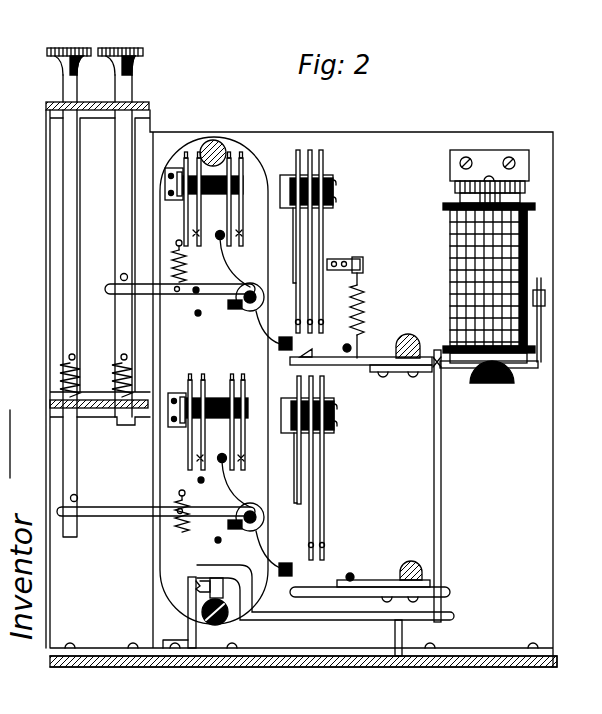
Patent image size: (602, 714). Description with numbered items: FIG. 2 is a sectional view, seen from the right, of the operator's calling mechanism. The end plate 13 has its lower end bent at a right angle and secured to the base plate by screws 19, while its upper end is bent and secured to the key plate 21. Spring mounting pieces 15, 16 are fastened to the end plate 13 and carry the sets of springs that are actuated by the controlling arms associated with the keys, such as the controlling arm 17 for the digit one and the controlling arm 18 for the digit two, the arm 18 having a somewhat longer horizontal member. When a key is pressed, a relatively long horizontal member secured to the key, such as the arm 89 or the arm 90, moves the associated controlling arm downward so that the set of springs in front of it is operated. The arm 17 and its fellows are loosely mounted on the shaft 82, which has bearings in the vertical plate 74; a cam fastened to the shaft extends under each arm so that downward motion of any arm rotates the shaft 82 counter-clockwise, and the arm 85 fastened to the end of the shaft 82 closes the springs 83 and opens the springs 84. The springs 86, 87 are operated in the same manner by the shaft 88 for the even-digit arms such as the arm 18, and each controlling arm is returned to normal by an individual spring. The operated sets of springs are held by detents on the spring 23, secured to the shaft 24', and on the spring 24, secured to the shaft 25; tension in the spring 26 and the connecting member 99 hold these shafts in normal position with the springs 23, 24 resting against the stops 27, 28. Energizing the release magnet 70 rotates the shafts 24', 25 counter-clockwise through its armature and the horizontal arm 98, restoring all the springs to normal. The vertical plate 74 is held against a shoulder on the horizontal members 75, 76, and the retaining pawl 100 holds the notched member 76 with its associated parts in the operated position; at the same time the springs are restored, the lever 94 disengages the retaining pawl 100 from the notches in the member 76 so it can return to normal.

The end plate 13 is at (527, 494).
The spring mounting piece 15 is at (286, 176).
The spring mounting piece 16 is at (288, 399).
The controlling arm 17 is at (116, 294).
The controlling arm 18 is at (125, 517).
The screws 19 is at (236, 652).
The key plate 21 is at (145, 107).
The spring 23 is at (338, 366).
The spring 24 is at (365, 599).
The shaft 24' is at (418, 325).
The shaft 25 is at (409, 566).
The spring 26 is at (365, 304).
The stop 27 is at (347, 345).
The stop 28 is at (350, 572).
The release magnet 70 is at (528, 247).
The vertical plate 74 is at (176, 556).
The horizontal member 75 is at (220, 141).
The horizontal member 76 is at (228, 620).
The shaft 82 is at (241, 309).
The springs 83 is at (196, 232).
The springs 84 is at (234, 230).
The arm 85 is at (226, 266).
The springs 86 is at (197, 317).
The springs 87 is at (195, 294).
The shaft 88 is at (244, 532).
The arm 89 is at (78, 497).
The arm 90 is at (121, 275).
The lever 94 is at (328, 620).
The horizontal arm 98 is at (452, 370).
The connecting member 99 is at (442, 444).
The retaining pawl 100 is at (222, 590).